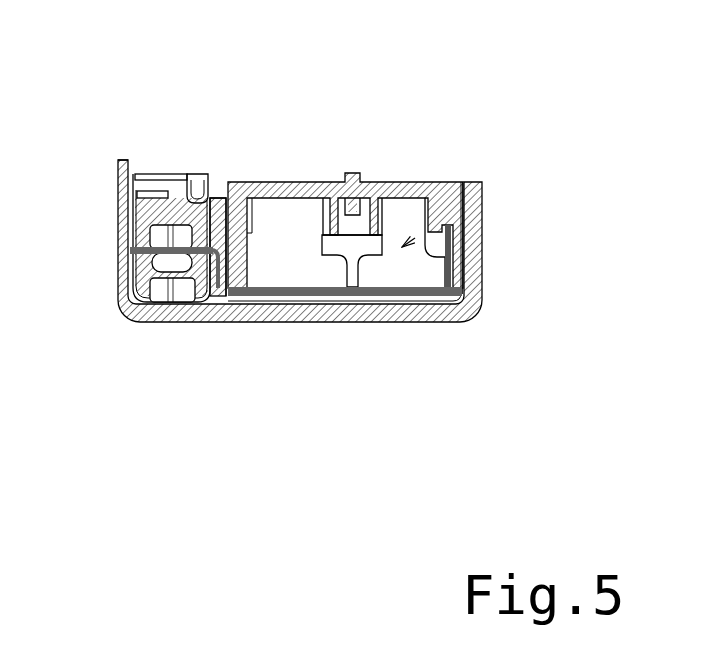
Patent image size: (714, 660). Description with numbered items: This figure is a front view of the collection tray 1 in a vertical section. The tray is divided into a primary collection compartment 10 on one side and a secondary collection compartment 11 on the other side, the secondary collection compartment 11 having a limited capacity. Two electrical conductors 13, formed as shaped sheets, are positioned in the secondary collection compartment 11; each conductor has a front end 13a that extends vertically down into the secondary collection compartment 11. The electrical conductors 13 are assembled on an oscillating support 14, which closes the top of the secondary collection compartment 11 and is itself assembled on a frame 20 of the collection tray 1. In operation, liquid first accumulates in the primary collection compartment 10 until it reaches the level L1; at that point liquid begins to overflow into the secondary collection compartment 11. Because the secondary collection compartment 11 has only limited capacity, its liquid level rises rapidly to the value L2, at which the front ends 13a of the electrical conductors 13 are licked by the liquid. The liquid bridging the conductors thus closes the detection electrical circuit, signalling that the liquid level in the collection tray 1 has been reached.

The collection tray 1 is at (331, 242).
The primary collection compartment 10 is at (163, 350).
The secondary collection compartment 11 is at (327, 287).
The electrical conductors 13 is at (484, 206).
The front end 13a is at (473, 275).
The oscillating support 14 is at (303, 182).
The frame 20 is at (180, 178).
The level L1 is at (118, 222).
The level L2 is at (300, 268).